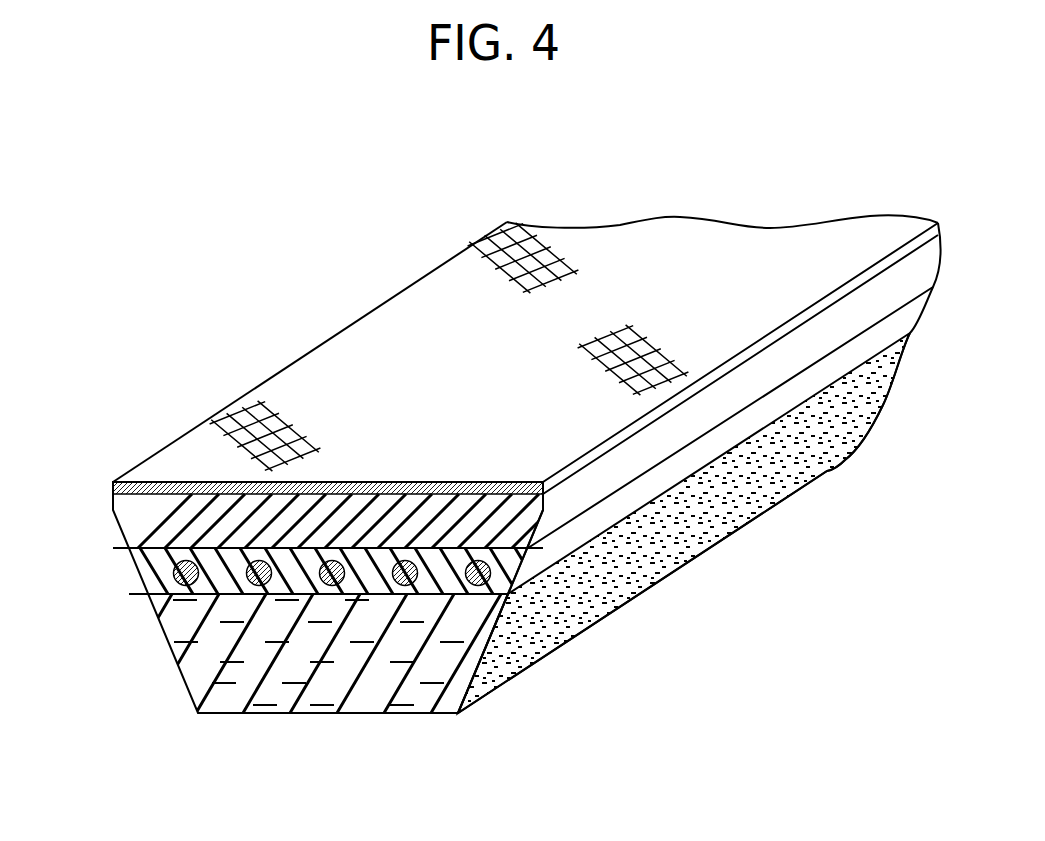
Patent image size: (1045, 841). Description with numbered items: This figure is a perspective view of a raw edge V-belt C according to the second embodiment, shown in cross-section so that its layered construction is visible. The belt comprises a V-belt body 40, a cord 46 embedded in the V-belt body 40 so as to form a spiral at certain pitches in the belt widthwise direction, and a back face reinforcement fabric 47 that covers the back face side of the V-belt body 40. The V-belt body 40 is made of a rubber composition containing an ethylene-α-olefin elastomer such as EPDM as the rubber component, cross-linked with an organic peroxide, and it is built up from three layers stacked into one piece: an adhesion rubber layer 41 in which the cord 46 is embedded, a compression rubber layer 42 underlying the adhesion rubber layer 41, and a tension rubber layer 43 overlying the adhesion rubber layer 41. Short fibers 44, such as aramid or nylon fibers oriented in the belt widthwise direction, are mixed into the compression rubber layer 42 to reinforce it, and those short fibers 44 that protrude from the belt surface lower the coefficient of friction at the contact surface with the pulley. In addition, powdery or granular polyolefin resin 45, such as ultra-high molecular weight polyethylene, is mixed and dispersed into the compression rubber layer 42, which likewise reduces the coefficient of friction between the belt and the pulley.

The raw edge V-belt C is at (378, 174).
The V-belt body 40 is at (543, 676).
The adhesion rubber layer 41 is at (146, 581).
The compression rubber layer 42 is at (184, 660).
The tension rubber layer 43 is at (128, 530).
The short fibers 44 is at (372, 683).
The polyolefin resin 45 is at (690, 512).
The cord 46 is at (512, 578).
The back face reinforcement fabric 47 is at (278, 374).